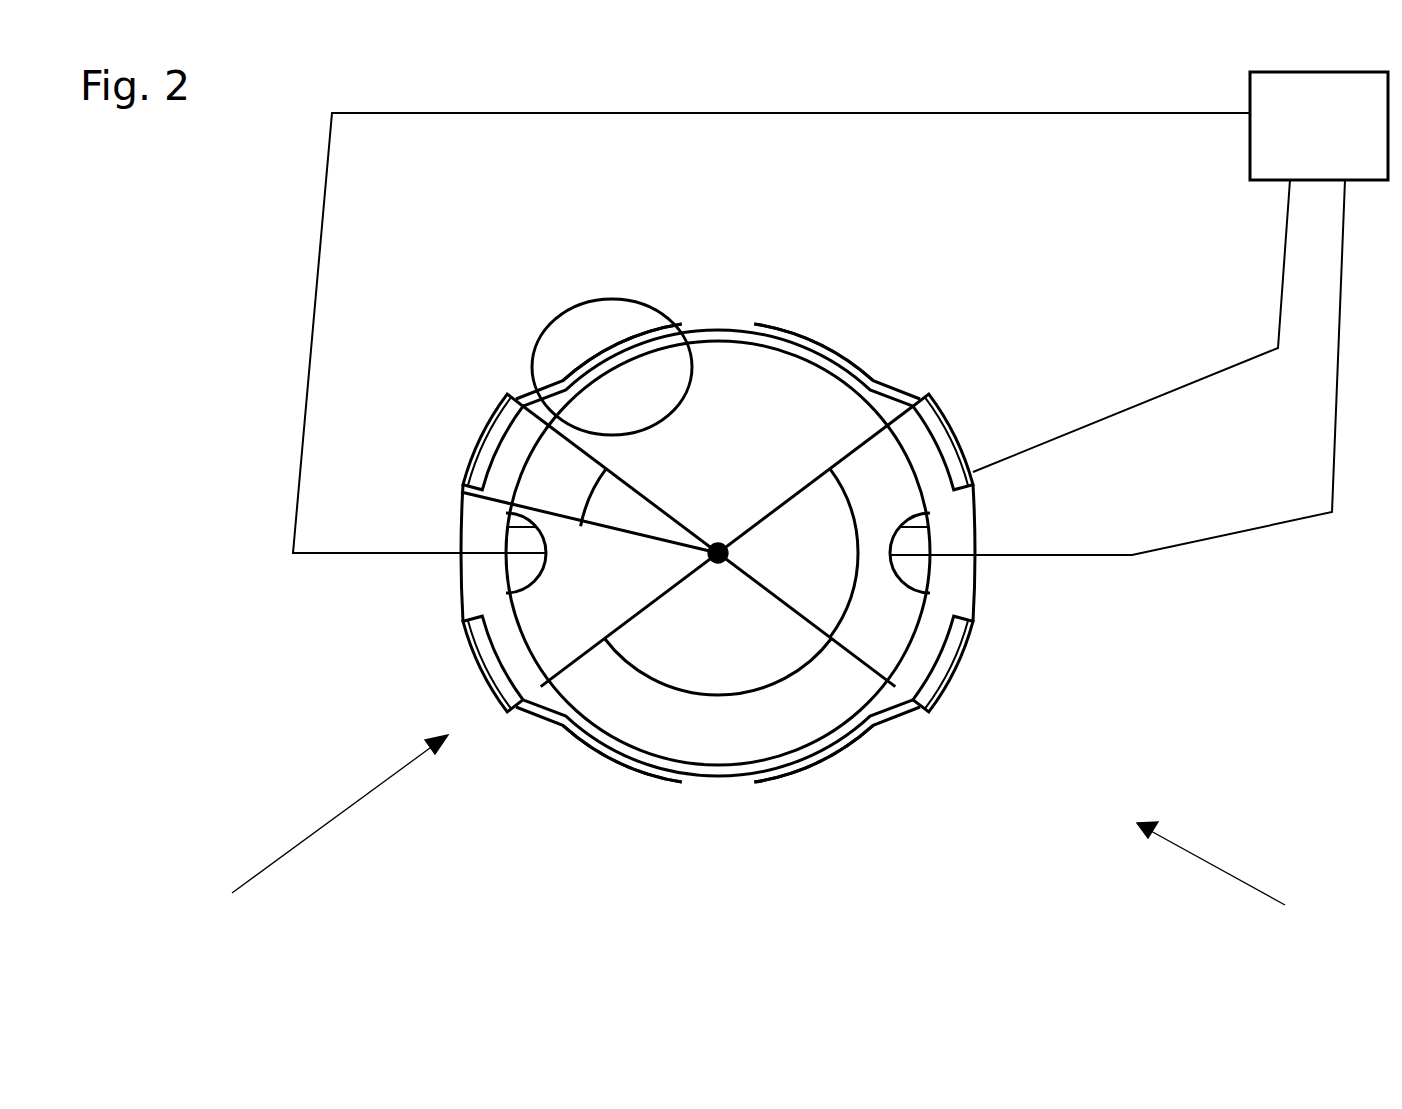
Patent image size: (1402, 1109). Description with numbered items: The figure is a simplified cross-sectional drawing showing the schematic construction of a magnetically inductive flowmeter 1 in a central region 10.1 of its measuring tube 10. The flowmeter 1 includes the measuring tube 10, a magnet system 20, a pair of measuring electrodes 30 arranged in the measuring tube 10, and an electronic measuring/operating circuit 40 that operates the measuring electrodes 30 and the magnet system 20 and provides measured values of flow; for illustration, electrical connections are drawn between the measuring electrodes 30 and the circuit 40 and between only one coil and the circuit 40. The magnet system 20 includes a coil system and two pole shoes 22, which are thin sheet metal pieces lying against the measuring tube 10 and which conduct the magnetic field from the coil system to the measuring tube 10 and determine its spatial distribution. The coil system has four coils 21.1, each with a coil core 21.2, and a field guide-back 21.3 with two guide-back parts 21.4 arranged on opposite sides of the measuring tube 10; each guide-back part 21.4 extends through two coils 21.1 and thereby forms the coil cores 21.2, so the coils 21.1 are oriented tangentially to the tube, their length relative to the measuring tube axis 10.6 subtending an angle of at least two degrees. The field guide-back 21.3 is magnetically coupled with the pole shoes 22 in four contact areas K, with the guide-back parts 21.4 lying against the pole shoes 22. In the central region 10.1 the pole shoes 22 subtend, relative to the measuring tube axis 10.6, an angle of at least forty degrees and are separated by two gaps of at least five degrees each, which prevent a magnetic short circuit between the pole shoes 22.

The magnetically inductive flowmeter 1 is at (1224, 882).
The measuring tube 10 is at (920, 480).
The central region 10.1 is at (309, 838).
The measuring tube axis 10.6 is at (722, 535).
The magnet system 20 is at (602, 793).
The coils 21.1 is at (500, 402).
The coil core 21.2 is at (485, 442).
The field guide-back 21.3 is at (452, 504).
The guide-back parts 21.4 is at (468, 592).
The pole shoes 22 is at (732, 325).
The measuring electrodes 30 is at (523, 569).
The electronic measuring/operating circuit 40 is at (840, 313).
The contact areas K is at (625, 298).